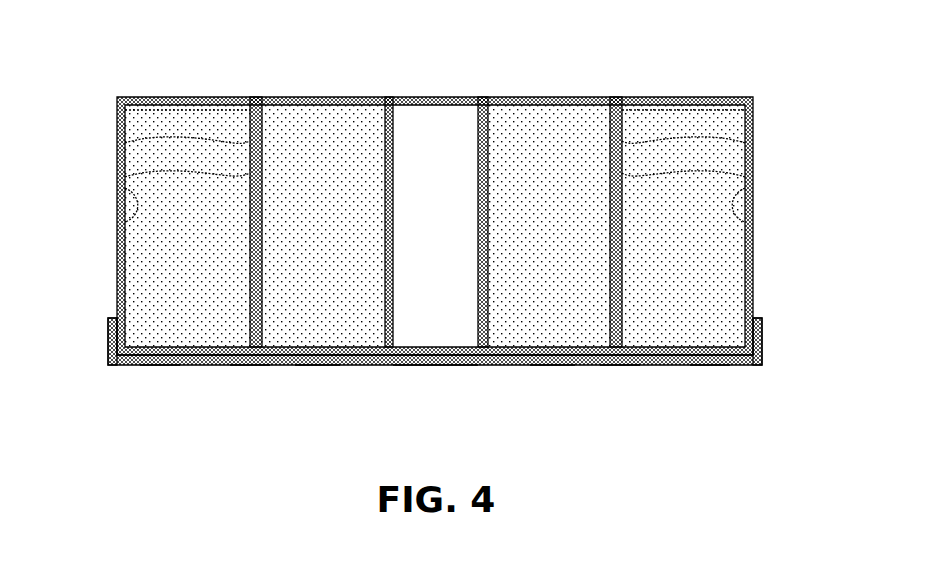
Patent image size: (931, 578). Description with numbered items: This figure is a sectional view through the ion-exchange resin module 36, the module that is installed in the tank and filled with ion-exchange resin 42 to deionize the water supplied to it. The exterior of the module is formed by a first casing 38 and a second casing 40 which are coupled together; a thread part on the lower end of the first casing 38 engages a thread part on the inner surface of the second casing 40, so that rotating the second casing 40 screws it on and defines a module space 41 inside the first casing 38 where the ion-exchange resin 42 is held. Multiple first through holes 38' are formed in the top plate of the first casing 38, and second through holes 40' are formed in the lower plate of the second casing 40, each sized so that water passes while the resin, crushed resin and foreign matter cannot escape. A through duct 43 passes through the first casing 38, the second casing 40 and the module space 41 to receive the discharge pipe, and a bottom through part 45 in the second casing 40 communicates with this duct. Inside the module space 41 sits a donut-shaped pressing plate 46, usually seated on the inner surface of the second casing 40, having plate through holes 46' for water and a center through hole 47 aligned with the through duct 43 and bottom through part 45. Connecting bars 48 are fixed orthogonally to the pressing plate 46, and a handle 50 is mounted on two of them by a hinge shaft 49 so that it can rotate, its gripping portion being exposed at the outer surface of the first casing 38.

The ion-exchange resin module 36 is at (117, 262).
The first casing 38 is at (435, 226).
The first through holes 38' is at (436, 188).
The second casing 40 is at (435, 341).
The second through holes 40' is at (435, 400).
The module space 41 is at (128, 197).
The ion-exchange resin 42 is at (203, 118).
The through duct 43 is at (446, 218).
The bottom through part 45 is at (453, 366).
The pressing plate 46 is at (435, 395).
The plate through hole 46' is at (435, 395).
The center through hole 47 is at (410, 366).
The connecting bar 48 is at (125, 175).
The hinge shaft 49 is at (125, 142).
The handle 50 is at (253, 96).